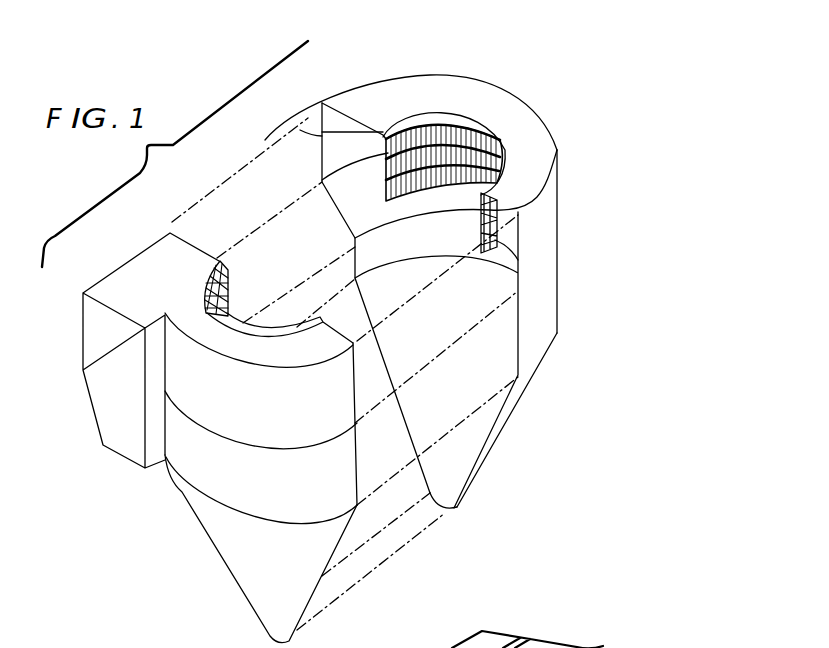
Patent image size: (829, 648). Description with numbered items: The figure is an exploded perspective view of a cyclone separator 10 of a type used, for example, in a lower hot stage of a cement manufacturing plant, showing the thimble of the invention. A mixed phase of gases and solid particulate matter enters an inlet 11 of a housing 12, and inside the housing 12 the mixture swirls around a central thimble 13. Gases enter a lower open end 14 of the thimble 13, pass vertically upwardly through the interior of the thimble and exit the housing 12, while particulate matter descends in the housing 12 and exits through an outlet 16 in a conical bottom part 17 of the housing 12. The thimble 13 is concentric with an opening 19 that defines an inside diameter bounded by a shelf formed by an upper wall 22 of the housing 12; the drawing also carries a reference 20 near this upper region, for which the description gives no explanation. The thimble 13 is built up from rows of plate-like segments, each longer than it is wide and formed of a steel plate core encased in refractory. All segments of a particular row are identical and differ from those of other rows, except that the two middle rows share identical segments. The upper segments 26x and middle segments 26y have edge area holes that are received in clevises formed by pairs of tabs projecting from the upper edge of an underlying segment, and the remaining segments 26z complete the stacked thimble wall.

The cyclone separator 10 is at (578, 174).
The inlet 11 is at (120, 388).
The housing 12 is at (556, 288).
The thimble 13 is at (383, 163).
The lower open end 14 is at (519, 260).
The outlet 16 is at (442, 513).
The conical bottom part 17 is at (490, 450).
The opening 19 is at (322, 132).
The upper rim 20 is at (300, 130).
The upper wall 22 is at (523, 148).
The upper segments 26x is at (412, 133).
The middle segments 26y is at (450, 172).
The segments 26z is at (460, 176).